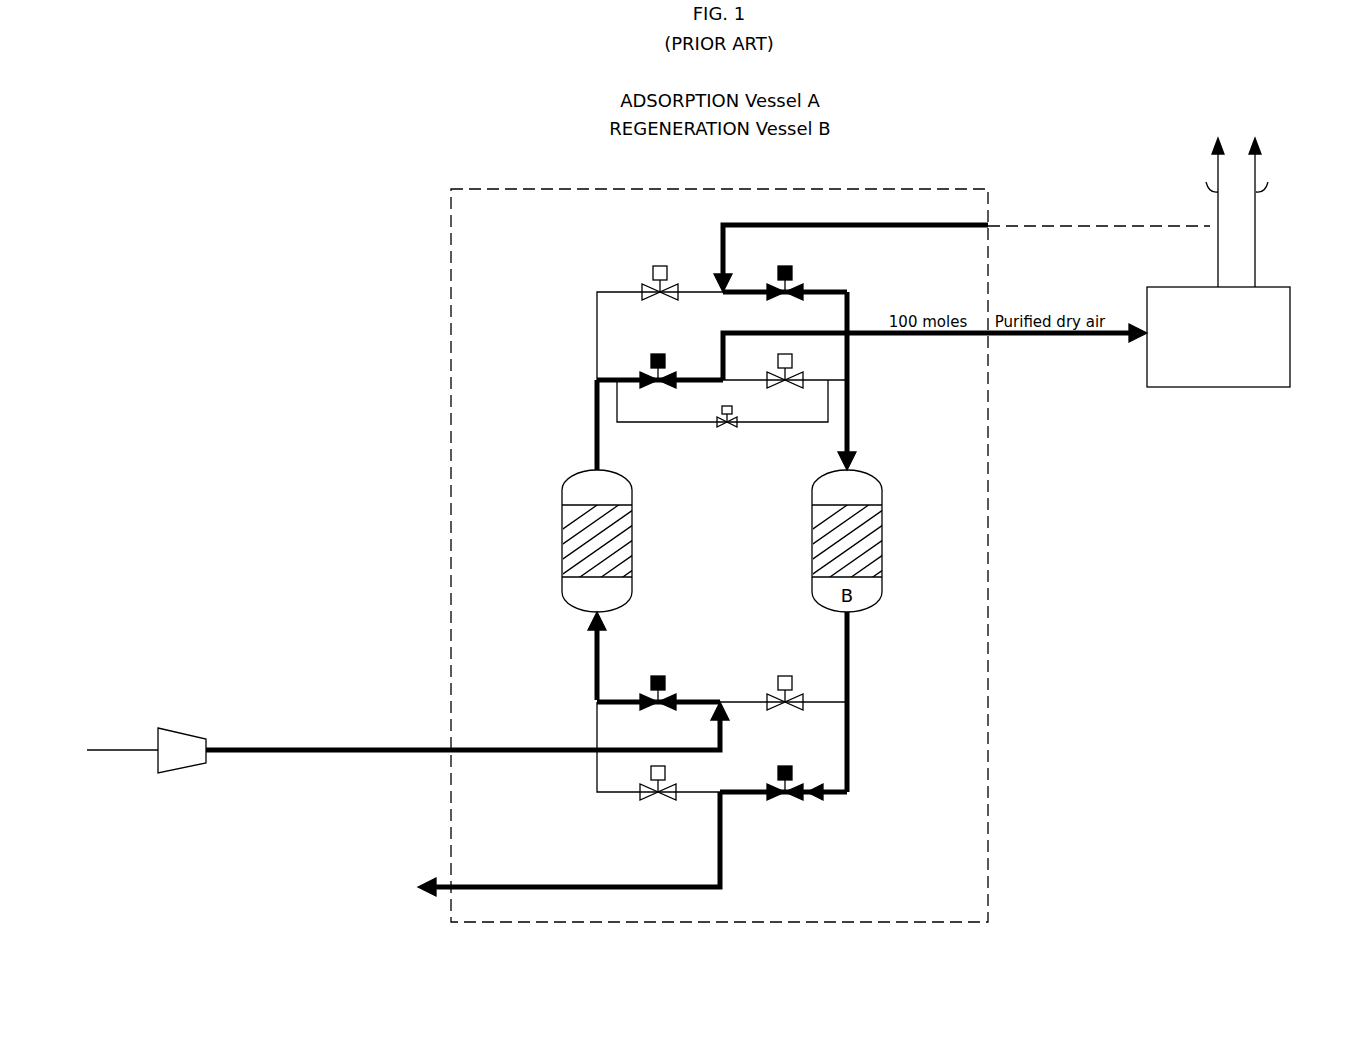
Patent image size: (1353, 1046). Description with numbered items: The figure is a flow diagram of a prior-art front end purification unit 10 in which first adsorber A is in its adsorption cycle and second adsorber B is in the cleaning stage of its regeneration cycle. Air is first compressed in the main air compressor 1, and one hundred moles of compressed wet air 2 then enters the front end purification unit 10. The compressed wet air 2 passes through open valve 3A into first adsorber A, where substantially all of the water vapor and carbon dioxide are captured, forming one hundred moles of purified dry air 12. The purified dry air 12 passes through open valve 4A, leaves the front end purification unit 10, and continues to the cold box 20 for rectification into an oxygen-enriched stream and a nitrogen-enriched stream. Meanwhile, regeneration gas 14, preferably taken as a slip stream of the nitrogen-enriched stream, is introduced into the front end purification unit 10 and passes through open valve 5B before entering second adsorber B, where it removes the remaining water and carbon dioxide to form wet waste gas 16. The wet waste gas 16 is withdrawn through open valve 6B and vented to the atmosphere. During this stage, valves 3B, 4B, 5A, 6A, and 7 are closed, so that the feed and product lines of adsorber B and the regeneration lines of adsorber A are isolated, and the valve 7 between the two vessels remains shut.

The main air compressor 1 is at (180, 731).
The compressed wet air 2 is at (530, 755).
The valve 3A is at (662, 676).
The valve 3B is at (790, 676).
The valve 4A is at (655, 362).
The valve 4B is at (790, 362).
The valve 5A is at (657, 273).
The valve 5B is at (790, 270).
The valve 6A is at (662, 772).
The valve 6B is at (791, 770).
The valve 7 is at (729, 427).
The front end purification unit 10 is at (440, 332).
The purified dry air 12 is at (595, 437).
The regeneration gas 14 is at (740, 224).
The wet waste gas 16 is at (849, 681).
The cold box 20 is at (1291, 355).